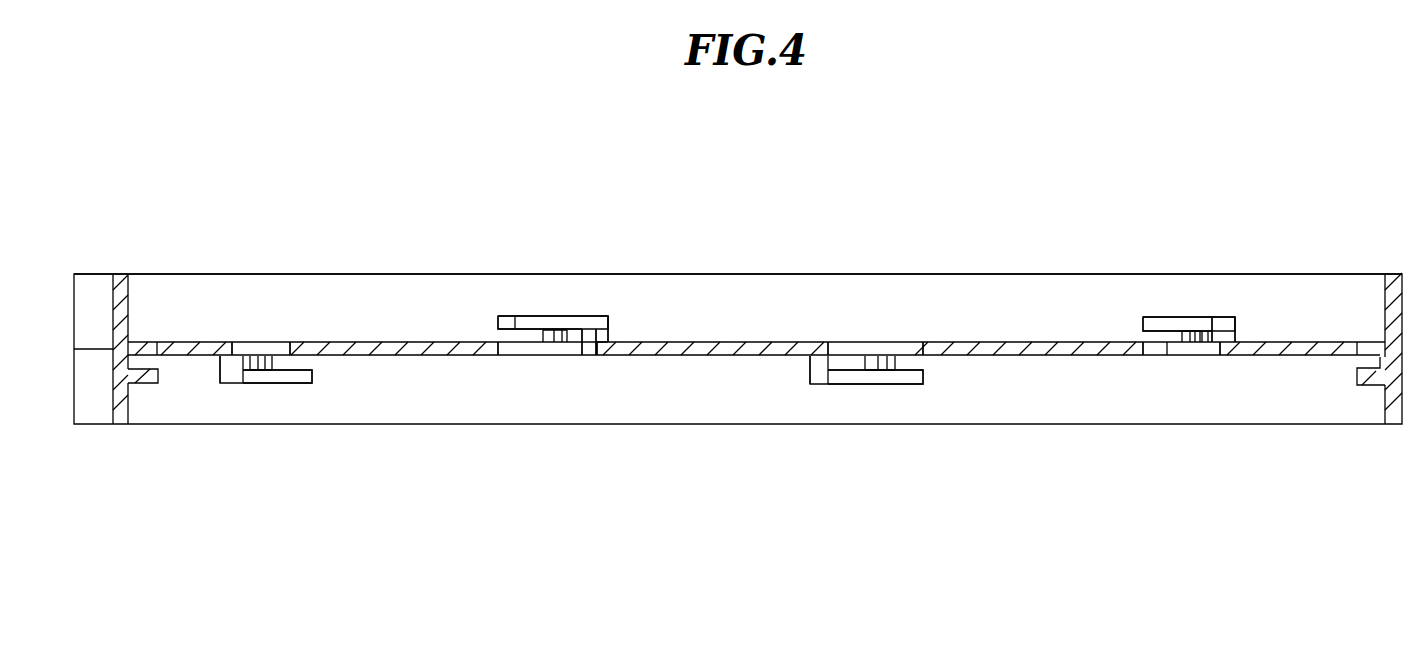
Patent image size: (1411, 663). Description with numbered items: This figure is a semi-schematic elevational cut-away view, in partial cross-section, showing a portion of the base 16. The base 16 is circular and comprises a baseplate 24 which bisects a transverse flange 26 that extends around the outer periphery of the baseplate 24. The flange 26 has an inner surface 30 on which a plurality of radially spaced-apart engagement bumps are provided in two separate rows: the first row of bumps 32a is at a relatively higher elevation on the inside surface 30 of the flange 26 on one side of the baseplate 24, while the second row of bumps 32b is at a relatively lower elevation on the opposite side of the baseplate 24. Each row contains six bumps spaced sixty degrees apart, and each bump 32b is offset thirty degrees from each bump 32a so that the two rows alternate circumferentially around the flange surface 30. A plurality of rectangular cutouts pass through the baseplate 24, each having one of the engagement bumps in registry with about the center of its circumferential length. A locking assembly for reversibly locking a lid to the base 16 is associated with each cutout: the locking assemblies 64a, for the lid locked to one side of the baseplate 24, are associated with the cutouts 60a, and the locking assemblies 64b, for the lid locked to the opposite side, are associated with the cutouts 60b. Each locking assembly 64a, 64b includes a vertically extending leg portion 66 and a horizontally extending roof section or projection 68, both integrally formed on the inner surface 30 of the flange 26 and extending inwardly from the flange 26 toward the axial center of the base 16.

The base 16 is at (274, 224).
The baseplate 24 is at (373, 342).
The transverse flange 26 is at (790, 272).
The inner surface 30 is at (955, 290).
The first row engagement bumps 32a is at (552, 338).
The second row engagement bumps 32b is at (268, 366).
The cutouts 60a is at (527, 349).
The cutouts 60b is at (257, 342).
The locking assemblies 64a is at (519, 300).
The locking assemblies 64b is at (237, 388).
The leg portion 66 is at (220, 370).
The roof section 68 is at (302, 381).